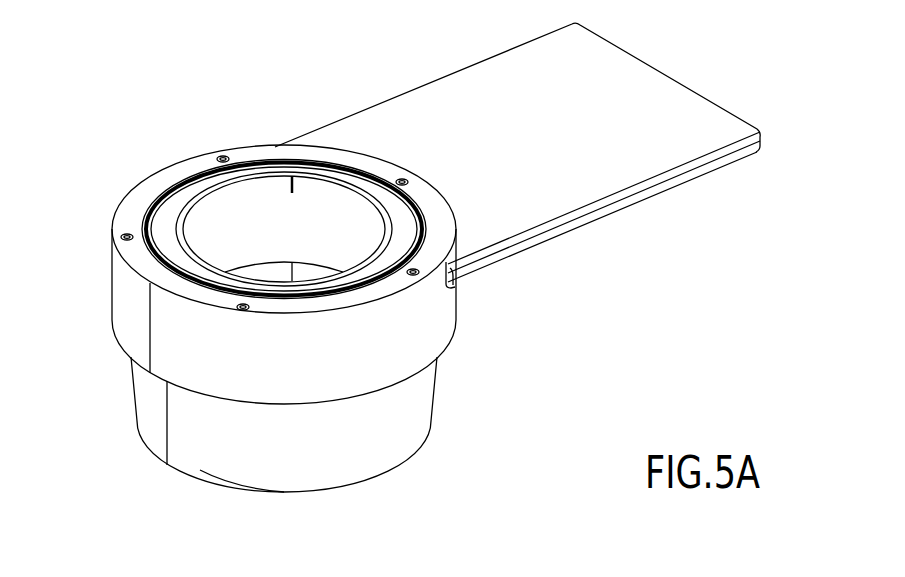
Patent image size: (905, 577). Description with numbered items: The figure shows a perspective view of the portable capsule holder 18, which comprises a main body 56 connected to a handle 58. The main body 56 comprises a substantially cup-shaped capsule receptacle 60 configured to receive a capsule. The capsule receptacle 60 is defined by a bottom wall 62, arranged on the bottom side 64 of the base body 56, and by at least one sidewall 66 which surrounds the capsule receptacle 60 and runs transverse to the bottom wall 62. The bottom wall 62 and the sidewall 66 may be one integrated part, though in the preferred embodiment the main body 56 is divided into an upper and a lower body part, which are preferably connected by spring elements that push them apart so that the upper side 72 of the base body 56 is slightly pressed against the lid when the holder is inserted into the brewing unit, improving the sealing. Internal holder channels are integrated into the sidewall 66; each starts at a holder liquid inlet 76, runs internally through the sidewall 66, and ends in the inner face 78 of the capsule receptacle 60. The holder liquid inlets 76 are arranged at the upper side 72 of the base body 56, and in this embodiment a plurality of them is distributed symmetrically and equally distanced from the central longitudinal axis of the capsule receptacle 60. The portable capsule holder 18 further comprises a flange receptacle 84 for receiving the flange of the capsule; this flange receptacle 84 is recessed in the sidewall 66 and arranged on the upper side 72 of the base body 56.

The portable capsule holder 18 is at (150, 122).
The handle 58 is at (468, 84).
The upper side 72 is at (139, 205).
The flange receptacle 84 is at (412, 226).
The inner face 78 is at (334, 234).
The capsule receptacle 60 is at (263, 223).
The holder liquid inlet 76 is at (222, 153).
The sidewall 66 is at (402, 348).
The main body 56 is at (165, 362).
The bottom wall 62 is at (345, 485).
The bottom side 64 is at (254, 499).